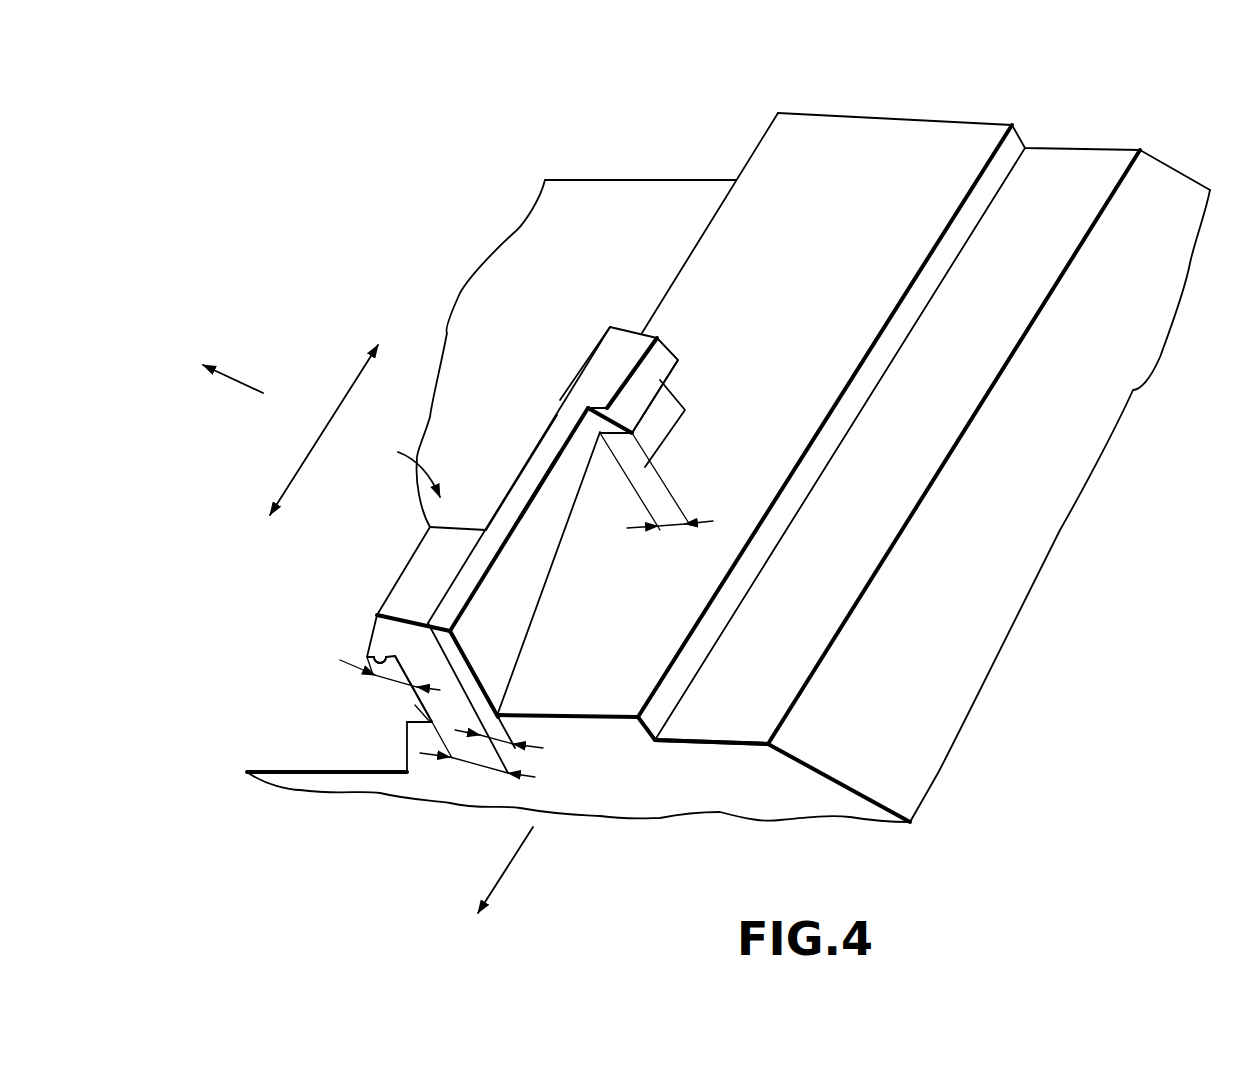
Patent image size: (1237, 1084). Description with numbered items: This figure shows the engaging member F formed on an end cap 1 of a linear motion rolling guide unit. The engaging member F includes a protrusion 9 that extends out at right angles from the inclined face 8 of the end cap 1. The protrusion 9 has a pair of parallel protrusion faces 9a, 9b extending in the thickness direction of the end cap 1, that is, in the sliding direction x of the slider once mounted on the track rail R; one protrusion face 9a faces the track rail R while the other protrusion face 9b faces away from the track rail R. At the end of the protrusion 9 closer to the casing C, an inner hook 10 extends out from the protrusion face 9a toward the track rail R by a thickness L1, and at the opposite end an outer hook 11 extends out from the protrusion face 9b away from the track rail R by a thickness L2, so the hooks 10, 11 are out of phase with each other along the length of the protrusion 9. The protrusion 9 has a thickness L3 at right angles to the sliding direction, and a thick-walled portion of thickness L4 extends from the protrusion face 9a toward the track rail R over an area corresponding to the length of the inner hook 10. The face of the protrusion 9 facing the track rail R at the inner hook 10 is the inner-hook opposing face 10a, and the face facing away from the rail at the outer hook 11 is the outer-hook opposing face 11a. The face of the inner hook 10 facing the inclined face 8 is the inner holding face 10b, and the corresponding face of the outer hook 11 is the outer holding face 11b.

The end cap 1 is at (1040, 90).
The inclined face 8 is at (627, 705).
The protrusion 9 is at (463, 402).
The protrusion face 9a is at (513, 480).
The protrusion face 9b is at (563, 487).
The inner hook 10 is at (383, 637).
The inner-hook opposing face 10a is at (410, 690).
The inner holding face 10b is at (373, 667).
The outer hook 11 is at (603, 427).
The outer-hook opposing face 11a is at (660, 427).
The outer holding face 11b is at (653, 400).
The thickness L1 is at (393, 682).
The thickness L2 is at (667, 530).
The thickness L3 is at (515, 713).
The thickness L4 is at (478, 770).
The x direction x is at (320, 433).
The track rail R is at (240, 386).
The engaging member F is at (413, 458).
The casing C is at (513, 858).